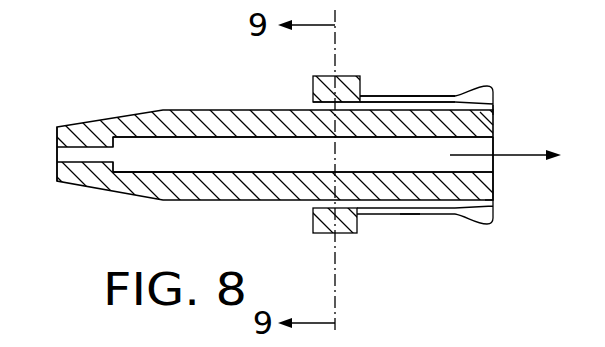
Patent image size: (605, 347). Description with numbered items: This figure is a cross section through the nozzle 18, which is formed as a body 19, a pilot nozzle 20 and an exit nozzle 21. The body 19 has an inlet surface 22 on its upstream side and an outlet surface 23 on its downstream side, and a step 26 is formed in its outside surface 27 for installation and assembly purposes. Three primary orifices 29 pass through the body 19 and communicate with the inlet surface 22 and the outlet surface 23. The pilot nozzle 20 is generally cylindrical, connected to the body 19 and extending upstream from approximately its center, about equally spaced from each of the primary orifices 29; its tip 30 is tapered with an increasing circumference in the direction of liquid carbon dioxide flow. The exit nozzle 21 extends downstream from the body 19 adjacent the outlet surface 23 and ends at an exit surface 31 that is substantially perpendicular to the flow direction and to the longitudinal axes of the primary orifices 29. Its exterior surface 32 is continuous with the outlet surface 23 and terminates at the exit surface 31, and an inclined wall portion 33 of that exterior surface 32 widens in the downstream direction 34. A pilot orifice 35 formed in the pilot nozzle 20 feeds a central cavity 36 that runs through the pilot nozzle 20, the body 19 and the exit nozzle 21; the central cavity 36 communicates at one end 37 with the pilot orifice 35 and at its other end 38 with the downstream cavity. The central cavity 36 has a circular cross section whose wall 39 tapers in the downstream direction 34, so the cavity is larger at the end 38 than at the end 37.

The nozzle 18 is at (519, 143).
The body 19 is at (348, 76).
The pilot nozzle 20 is at (203, 108).
The exit nozzle 21 is at (497, 108).
The inlet surface 22 is at (313, 82).
The outlet surface 23 is at (455, 93).
The step 26 is at (362, 95).
The outside surface 27 is at (343, 234).
The primary orifices 29 is at (413, 96).
The tip 30 is at (114, 97).
The exit surface 31 is at (496, 182).
The exterior surface 32 is at (453, 92).
The inclined wall portion 33 is at (496, 200).
The downstream direction 34 is at (525, 157).
The pilot orifice 35 is at (78, 153).
The central cavity 36 is at (158, 160).
The end 37 is at (100, 166).
The end 38 is at (496, 137).
The wall 39 is at (237, 138).